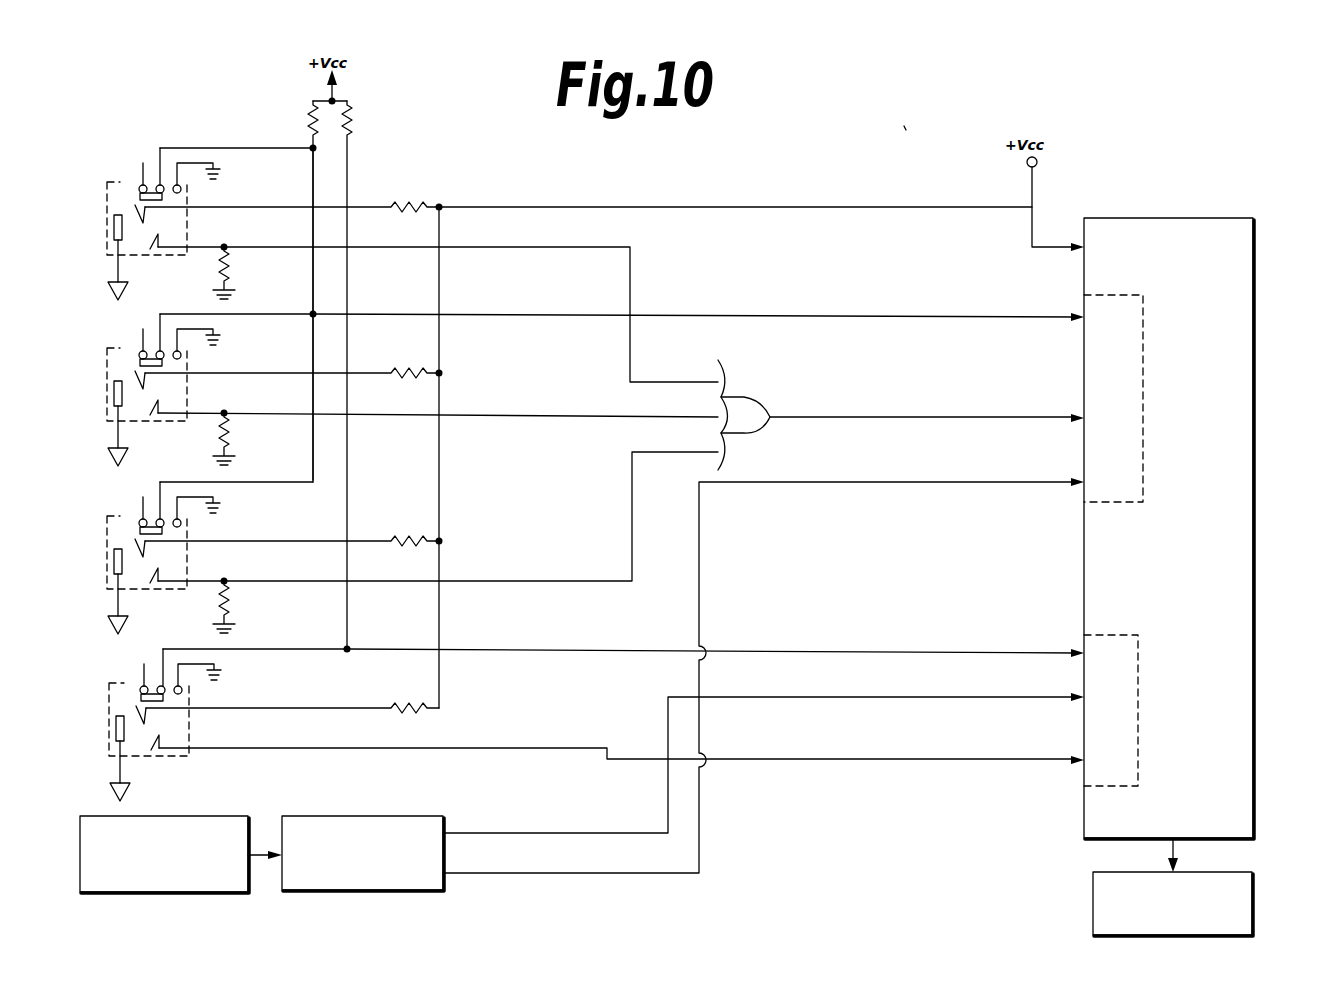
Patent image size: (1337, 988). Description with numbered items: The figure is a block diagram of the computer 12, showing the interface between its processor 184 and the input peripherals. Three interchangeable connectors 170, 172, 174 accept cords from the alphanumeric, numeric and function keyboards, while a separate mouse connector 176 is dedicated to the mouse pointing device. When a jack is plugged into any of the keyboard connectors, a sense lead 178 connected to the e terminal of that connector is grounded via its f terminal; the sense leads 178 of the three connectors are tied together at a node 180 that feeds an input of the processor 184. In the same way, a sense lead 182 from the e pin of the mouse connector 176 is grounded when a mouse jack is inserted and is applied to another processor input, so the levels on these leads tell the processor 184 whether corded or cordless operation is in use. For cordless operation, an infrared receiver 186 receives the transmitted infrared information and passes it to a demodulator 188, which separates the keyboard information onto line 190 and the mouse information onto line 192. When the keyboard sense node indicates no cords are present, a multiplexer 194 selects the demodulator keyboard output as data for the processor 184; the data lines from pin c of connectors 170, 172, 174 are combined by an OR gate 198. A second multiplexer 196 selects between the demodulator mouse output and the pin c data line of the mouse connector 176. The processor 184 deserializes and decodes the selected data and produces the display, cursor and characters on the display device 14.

The computer 12 is at (904, 128).
The display device 14 is at (1093, 890).
The connector 170 is at (105, 171).
The connector 172 is at (107, 351).
The connector 174 is at (105, 520).
The mouse connector 176 is at (108, 690).
The sense lead 178 is at (228, 147).
The node 180 is at (313, 312).
The sense lead 182 is at (188, 648).
The processor 184 is at (1255, 406).
The infrared receiver 186 is at (165, 893).
The demodulator 188 is at (312, 891).
The line 190 is at (471, 876).
The line 192 is at (472, 831).
The multiplexer 194 is at (1143, 355).
The multiplexer 196 is at (1138, 678).
The OR gate 198 is at (757, 405).